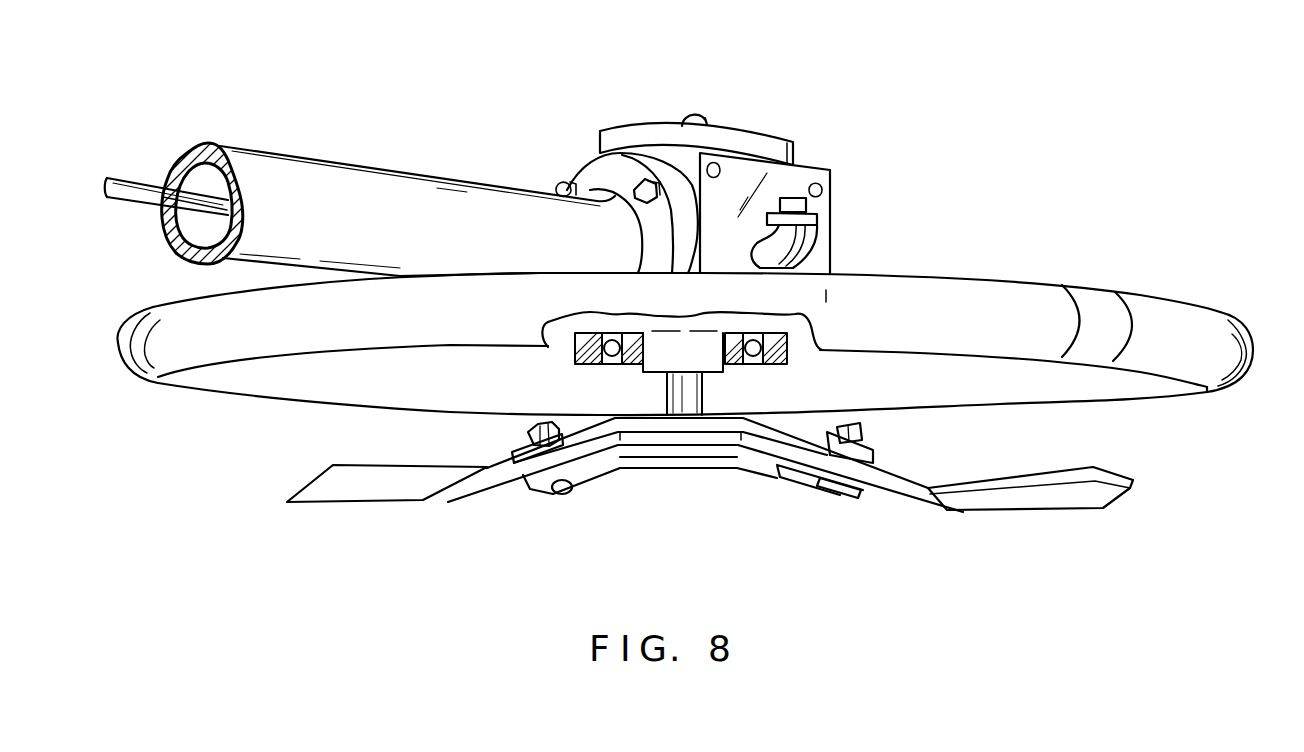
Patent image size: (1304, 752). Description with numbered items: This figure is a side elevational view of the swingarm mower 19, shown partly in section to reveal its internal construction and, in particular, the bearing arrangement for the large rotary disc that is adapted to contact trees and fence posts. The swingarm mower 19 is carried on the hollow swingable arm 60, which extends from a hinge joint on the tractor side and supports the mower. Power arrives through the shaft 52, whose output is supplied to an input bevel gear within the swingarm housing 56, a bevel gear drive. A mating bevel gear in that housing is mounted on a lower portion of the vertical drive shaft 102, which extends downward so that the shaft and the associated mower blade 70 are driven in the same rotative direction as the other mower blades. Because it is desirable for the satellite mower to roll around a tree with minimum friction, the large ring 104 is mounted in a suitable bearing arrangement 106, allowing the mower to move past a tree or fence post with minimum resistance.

The swingarm mower 19 is at (1001, 118).
The shaft 52 is at (133, 183).
The hollow swingable arm 60 is at (375, 187).
The swingarm housing 56 is at (792, 178).
The bearing arrangement 106 is at (787, 340).
The large ring 104 is at (1157, 312).
The vertical drive shaft 102 is at (687, 391).
The mower blade 70 is at (777, 463).